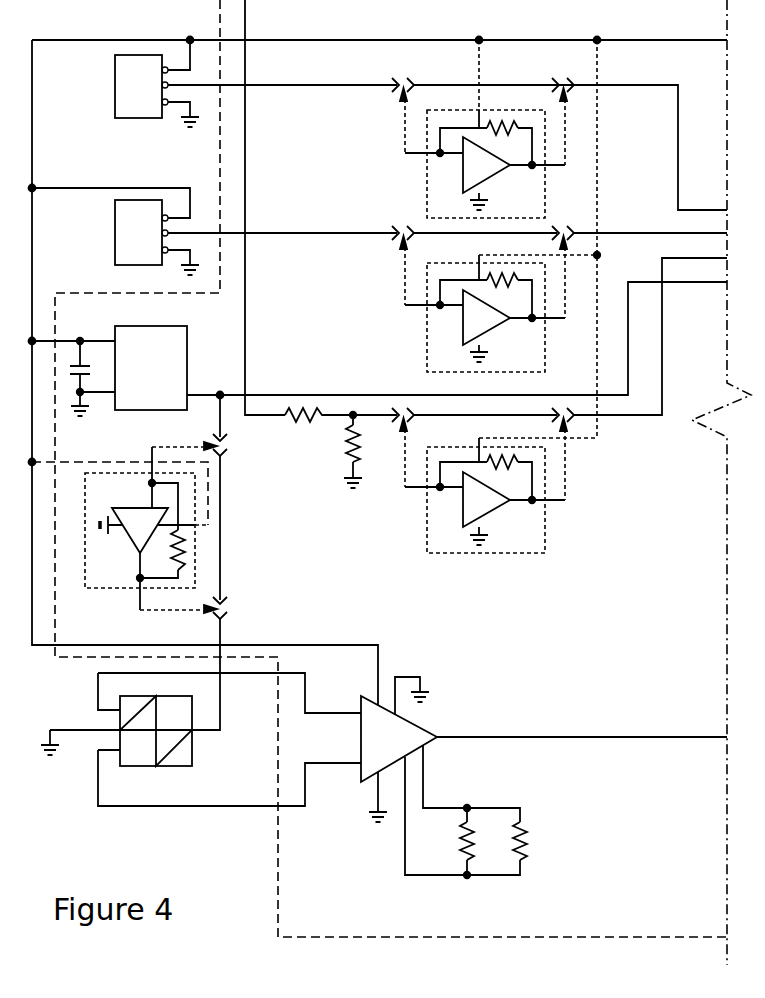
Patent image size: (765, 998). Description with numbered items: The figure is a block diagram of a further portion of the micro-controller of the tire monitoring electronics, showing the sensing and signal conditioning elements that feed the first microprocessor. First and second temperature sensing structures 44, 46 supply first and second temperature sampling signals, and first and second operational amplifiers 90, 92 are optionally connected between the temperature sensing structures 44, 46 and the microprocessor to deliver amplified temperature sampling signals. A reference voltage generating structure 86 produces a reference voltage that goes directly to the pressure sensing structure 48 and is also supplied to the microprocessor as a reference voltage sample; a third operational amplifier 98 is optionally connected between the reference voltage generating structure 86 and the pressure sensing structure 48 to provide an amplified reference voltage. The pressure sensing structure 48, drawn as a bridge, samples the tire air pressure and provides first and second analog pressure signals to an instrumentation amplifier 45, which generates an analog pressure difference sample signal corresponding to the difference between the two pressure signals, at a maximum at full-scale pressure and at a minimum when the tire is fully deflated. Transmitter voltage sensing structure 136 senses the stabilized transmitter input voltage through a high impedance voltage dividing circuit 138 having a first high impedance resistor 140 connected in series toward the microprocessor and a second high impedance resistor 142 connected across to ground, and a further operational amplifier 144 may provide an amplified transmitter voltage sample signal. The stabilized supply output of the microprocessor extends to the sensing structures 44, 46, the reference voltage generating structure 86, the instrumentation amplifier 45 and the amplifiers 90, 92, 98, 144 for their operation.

The first temperature sensing structure 44 is at (124, 98).
The second temperature sensing structure 46 is at (124, 244).
The voltage reference 86 is at (151, 378).
The third operational amplifier 98 is at (124, 595).
The pressure sensing structure 48 is at (144, 739).
The instrumentation amplifier 45 is at (453, 722).
The first operational amplifier 90 is at (416, 185).
The second operational amplifier 92 is at (416, 338).
The amplifier stage 144 is at (458, 565).
The transmitter voltage sensing structure 136 is at (487, 415).
The high impedance voltage dividing circuit 138 is at (338, 456).
The first high impedance resistor 140 is at (295, 420).
The second high impedance resistor 142 is at (359, 455).